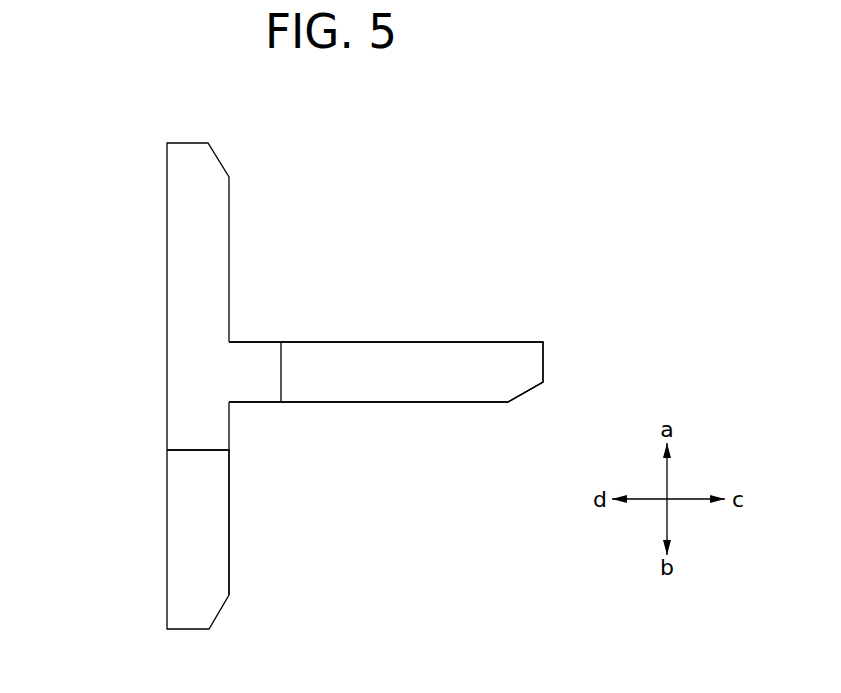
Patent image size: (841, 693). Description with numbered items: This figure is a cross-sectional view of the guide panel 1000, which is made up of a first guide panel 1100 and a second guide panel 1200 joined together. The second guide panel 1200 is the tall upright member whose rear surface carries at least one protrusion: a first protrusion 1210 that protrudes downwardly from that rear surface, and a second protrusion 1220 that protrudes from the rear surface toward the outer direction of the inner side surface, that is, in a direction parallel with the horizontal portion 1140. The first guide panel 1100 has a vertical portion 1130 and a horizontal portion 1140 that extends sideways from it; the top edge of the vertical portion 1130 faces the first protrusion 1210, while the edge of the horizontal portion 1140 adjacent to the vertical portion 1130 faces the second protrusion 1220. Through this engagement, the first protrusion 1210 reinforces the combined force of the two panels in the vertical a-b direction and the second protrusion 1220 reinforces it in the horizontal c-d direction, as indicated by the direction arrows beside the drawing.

The guide panel 1000 is at (85, 123).
The first guide panel 1100 is at (450, 483).
The vertical portion 1130 is at (224, 484).
The horizontal portion 1140 is at (424, 392).
The second guide panel 1200 is at (222, 235).
The first protrusion 1210 is at (174, 431).
The second protrusion 1220 is at (267, 347).